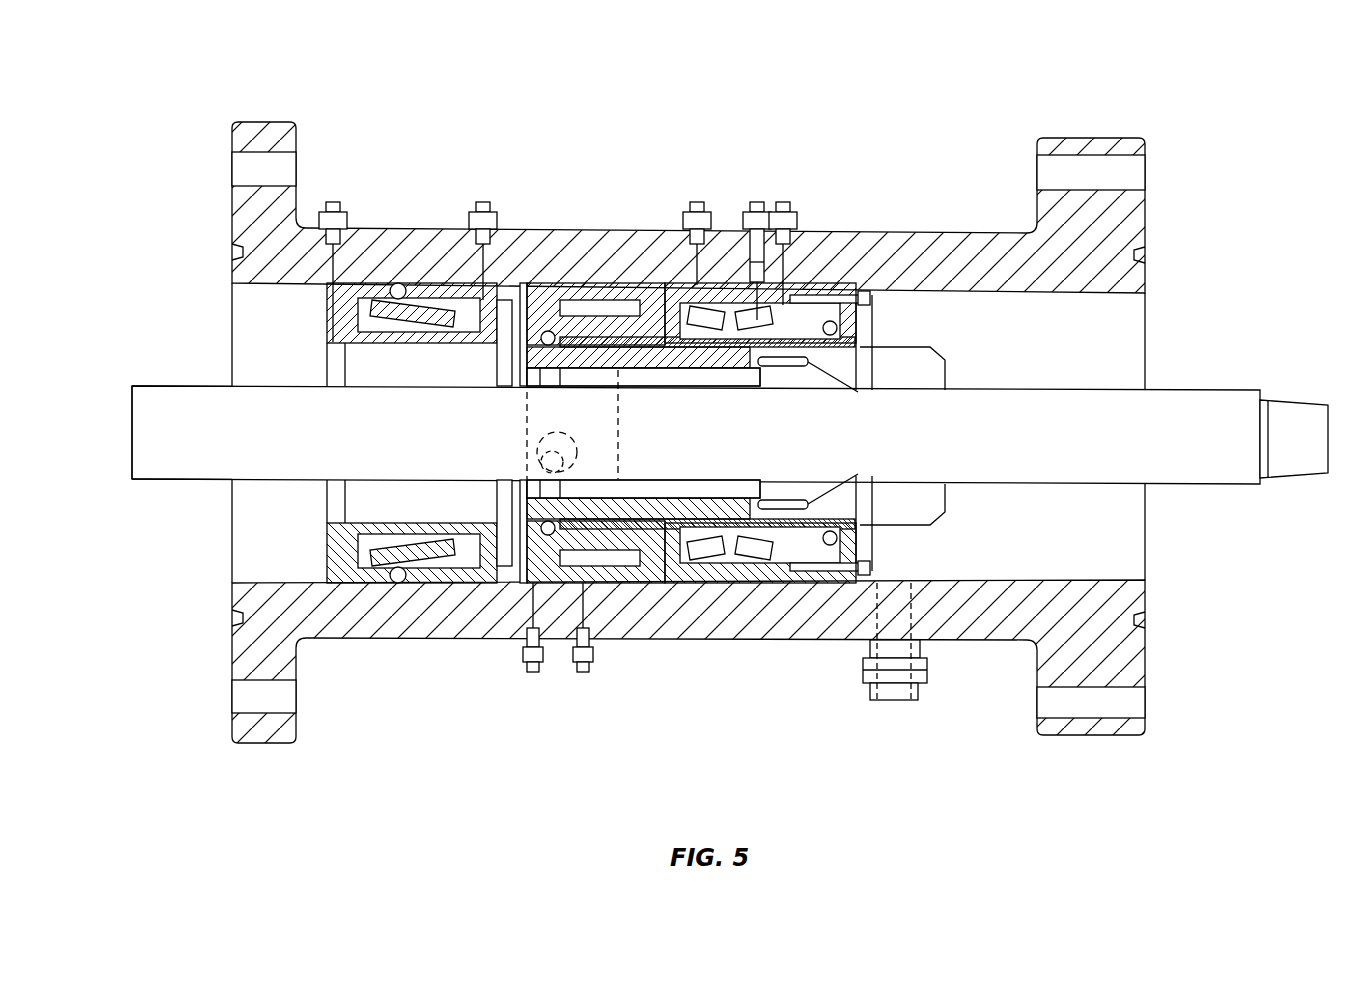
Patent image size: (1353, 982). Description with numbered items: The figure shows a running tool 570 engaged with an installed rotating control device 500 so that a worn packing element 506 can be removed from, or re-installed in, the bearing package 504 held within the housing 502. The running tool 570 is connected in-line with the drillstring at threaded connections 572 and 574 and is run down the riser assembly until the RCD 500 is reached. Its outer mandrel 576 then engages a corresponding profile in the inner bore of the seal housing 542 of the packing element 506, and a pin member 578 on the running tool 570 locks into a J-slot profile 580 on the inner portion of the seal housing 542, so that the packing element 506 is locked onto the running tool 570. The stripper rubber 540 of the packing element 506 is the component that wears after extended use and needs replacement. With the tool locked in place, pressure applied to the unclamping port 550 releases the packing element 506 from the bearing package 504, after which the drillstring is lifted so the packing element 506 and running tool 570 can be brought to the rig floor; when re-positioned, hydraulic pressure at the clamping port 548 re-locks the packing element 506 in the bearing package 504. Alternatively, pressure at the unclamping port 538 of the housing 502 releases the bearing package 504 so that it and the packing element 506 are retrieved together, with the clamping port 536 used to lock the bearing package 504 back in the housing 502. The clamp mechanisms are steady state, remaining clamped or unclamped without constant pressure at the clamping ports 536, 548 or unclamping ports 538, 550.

The rotating control device 500 is at (982, 74).
The housing 502 is at (687, 628).
The bearing package 504 is at (612, 298).
The packing element 506 is at (645, 500).
The clamping port 536 is at (336, 204).
The unclamping port 538 is at (486, 204).
The stripper rubber 540 is at (916, 510).
The seal housing 542 is at (578, 320).
The clamping port 548 is at (531, 673).
The unclamping port 550 is at (585, 673).
The running tool 570 is at (1178, 472).
The threaded connection 572 is at (1306, 405).
The threaded connection 574 is at (130, 447).
The outer mandrel 576 is at (598, 378).
The pin member 578 is at (548, 480).
The J-slot profile 580 is at (540, 437).